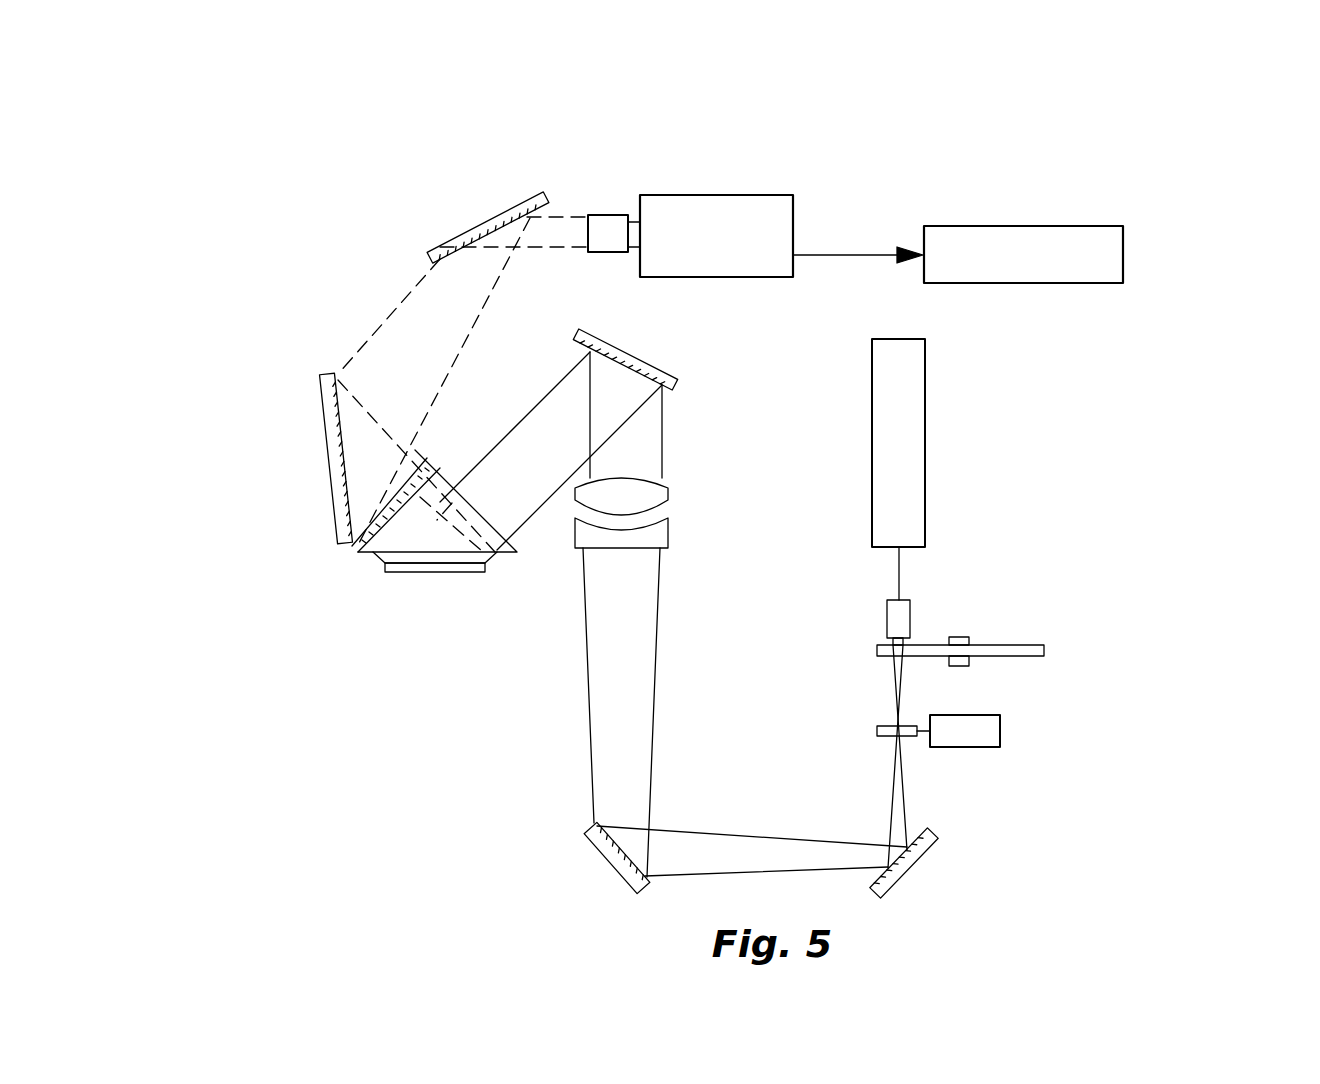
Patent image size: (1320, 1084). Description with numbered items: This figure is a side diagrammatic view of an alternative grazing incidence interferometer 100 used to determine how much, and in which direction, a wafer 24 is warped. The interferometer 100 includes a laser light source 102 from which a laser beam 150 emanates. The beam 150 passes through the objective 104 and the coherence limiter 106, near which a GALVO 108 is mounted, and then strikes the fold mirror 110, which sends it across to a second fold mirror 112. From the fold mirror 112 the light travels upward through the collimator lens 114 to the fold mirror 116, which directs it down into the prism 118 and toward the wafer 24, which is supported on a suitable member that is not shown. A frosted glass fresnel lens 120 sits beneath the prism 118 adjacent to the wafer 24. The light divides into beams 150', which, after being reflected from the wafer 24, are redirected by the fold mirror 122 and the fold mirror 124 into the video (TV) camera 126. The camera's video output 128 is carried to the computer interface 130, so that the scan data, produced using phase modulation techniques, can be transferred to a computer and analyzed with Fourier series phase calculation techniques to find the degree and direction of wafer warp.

The grazing incidence interferometer 100 is at (1160, 386).
The laser light source 102 is at (913, 515).
The objective 104 is at (893, 622).
The coherence limiter 106 is at (1008, 645).
The GALVO 108 is at (987, 738).
The fold mirror 110 is at (938, 827).
The fold mirror 112 is at (585, 853).
The collimator lens 114 is at (668, 493).
The fold mirror 116 is at (678, 388).
The prism 118 is at (452, 480).
The fresnel lens 120 is at (350, 555).
The fold mirror 122 is at (330, 455).
The fold mirror 124 is at (498, 217).
The video (TV) camera 126 is at (782, 213).
The video output 128 is at (857, 257).
The computer interface 130 is at (1082, 226).
The laser beam 150 is at (953, 571).
The beams 150' is at (622, 510).
The wafer 24 is at (437, 572).